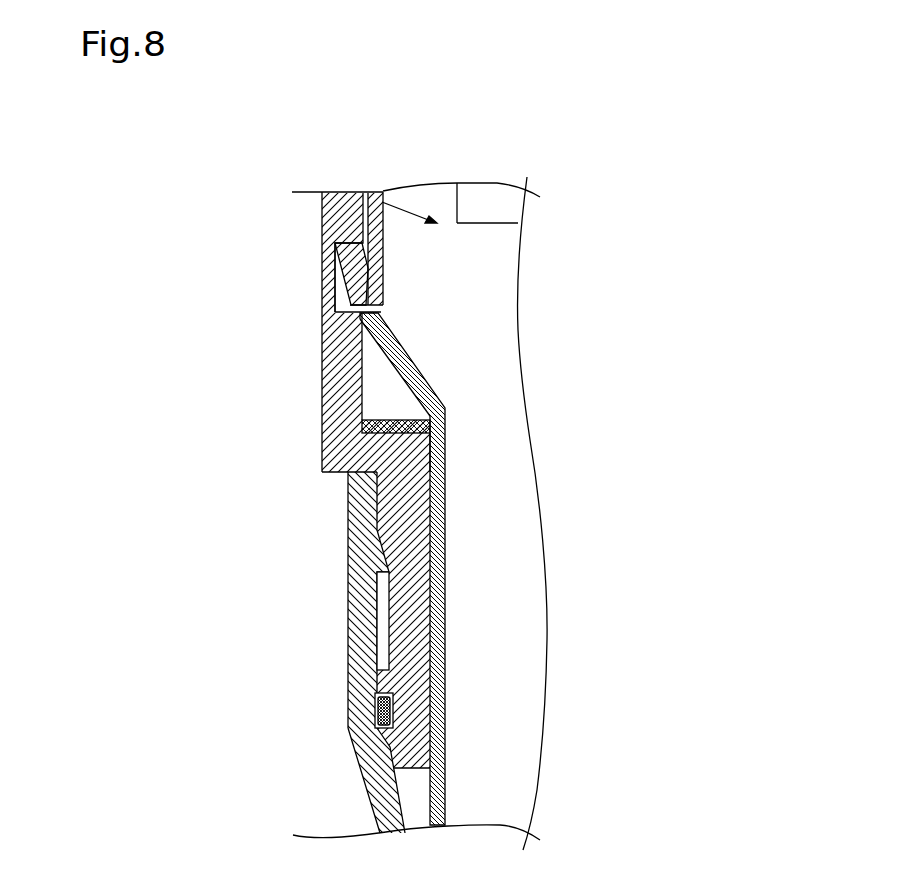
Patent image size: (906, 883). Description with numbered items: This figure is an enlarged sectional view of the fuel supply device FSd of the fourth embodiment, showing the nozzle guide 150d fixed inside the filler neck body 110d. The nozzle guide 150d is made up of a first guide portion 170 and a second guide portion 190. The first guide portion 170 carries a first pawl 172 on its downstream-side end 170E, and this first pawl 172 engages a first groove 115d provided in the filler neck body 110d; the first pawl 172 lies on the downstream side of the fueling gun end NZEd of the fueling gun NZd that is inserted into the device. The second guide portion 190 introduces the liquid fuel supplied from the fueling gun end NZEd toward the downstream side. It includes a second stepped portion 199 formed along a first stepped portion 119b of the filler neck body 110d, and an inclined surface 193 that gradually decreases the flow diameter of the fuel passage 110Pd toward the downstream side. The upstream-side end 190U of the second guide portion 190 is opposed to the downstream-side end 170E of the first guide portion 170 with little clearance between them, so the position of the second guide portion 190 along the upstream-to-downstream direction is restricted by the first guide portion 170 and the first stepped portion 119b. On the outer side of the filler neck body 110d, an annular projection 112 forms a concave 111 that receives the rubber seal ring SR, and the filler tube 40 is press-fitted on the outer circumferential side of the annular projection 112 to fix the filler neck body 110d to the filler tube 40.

The fuel passage 110Pd is at (360, 192).
The first pawl 172 is at (320, 213).
The first groove 115d is at (330, 267).
The filler neck body 110d is at (320, 270).
The nozzle guide 150d is at (178, 293).
The first guide portion 170 is at (335, 303).
The second guide portion 190 is at (377, 342).
The second stepped portion 199 is at (410, 416).
The first stepped portion 119b is at (322, 425).
The annular projection 112 is at (377, 570).
The filler tube 40 is at (348, 603).
The seal ring SR is at (375, 700).
The concave 111 is at (385, 758).
The fuel supply device FSd is at (668, 212).
The fueling gun NZd is at (487, 213).
The fueling gun end NZEd is at (487, 226).
The downstream-side end 170E is at (383, 310).
The upstream-side end 190U is at (381, 316).
The inclined surface 193 is at (407, 384).